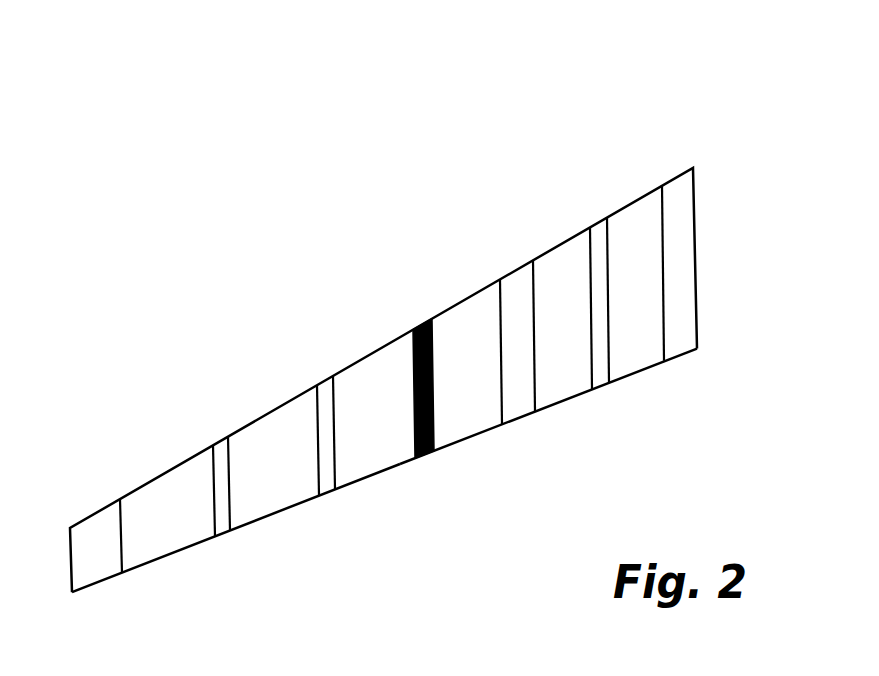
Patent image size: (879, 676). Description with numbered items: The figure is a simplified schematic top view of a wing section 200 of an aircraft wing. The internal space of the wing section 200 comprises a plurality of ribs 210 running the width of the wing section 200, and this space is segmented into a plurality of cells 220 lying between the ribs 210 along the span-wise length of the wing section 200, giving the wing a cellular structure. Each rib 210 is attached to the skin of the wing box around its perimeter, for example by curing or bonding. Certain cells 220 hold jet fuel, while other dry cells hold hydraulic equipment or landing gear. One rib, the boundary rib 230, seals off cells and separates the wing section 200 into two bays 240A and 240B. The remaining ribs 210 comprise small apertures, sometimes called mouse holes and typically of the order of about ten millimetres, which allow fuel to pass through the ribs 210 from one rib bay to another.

The wing section 200 is at (275, 171).
The ribs 210 is at (86, 543).
The cells 220 is at (173, 522).
The boundary rib 230 is at (420, 323).
The bay 240A is at (293, 517).
The bay 240B is at (568, 402).